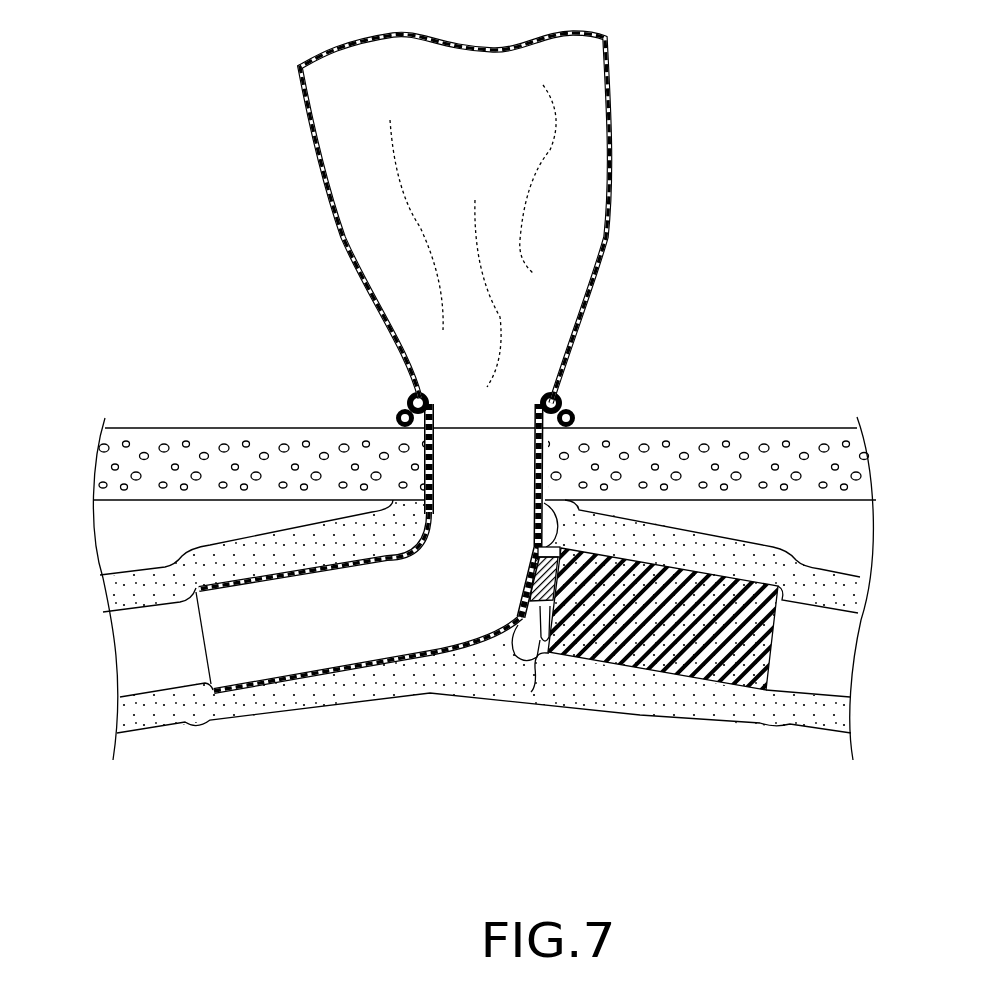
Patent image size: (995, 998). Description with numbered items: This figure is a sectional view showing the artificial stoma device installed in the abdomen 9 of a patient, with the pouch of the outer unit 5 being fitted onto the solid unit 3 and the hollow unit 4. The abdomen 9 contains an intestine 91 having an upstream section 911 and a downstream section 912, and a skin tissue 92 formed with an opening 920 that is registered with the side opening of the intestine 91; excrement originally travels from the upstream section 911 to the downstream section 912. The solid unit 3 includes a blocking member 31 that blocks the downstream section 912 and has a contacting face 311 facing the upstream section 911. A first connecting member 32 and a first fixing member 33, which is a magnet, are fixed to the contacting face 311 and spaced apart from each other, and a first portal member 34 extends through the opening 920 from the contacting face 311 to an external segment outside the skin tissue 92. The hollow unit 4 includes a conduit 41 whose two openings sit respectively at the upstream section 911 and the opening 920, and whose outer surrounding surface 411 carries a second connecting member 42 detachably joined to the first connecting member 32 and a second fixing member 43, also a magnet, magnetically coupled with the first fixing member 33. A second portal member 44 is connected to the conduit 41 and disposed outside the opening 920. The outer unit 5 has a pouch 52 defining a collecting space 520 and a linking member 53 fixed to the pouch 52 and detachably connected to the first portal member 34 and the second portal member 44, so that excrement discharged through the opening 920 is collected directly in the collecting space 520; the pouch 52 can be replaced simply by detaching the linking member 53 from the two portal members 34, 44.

The solid unit 3 is at (669, 674).
The blocking member 31 is at (606, 714).
The contacting face 311 is at (533, 690).
The first connecting member 32 is at (520, 595).
The first fixing member 33 is at (560, 640).
The first portal member 34 is at (557, 393).
The hollow unit 4 is at (378, 570).
The conduit 41 is at (320, 673).
The outer surrounding surface 411 is at (550, 513).
The second connecting member 42 is at (530, 577).
The second fixing member 43 is at (507, 667).
The second portal member 44 is at (410, 395).
The outer unit 5 is at (481, 229).
The pouch 52 is at (608, 102).
The collecting space 520 is at (357, 136).
The linking member 53 is at (396, 417).
The abdomen 9 is at (449, 555).
The intestine 91 is at (110, 553).
The upstream section 911 is at (273, 710).
The downstream section 912 is at (720, 717).
The skin tissue 92 is at (808, 435).
The opening 920 is at (437, 465).